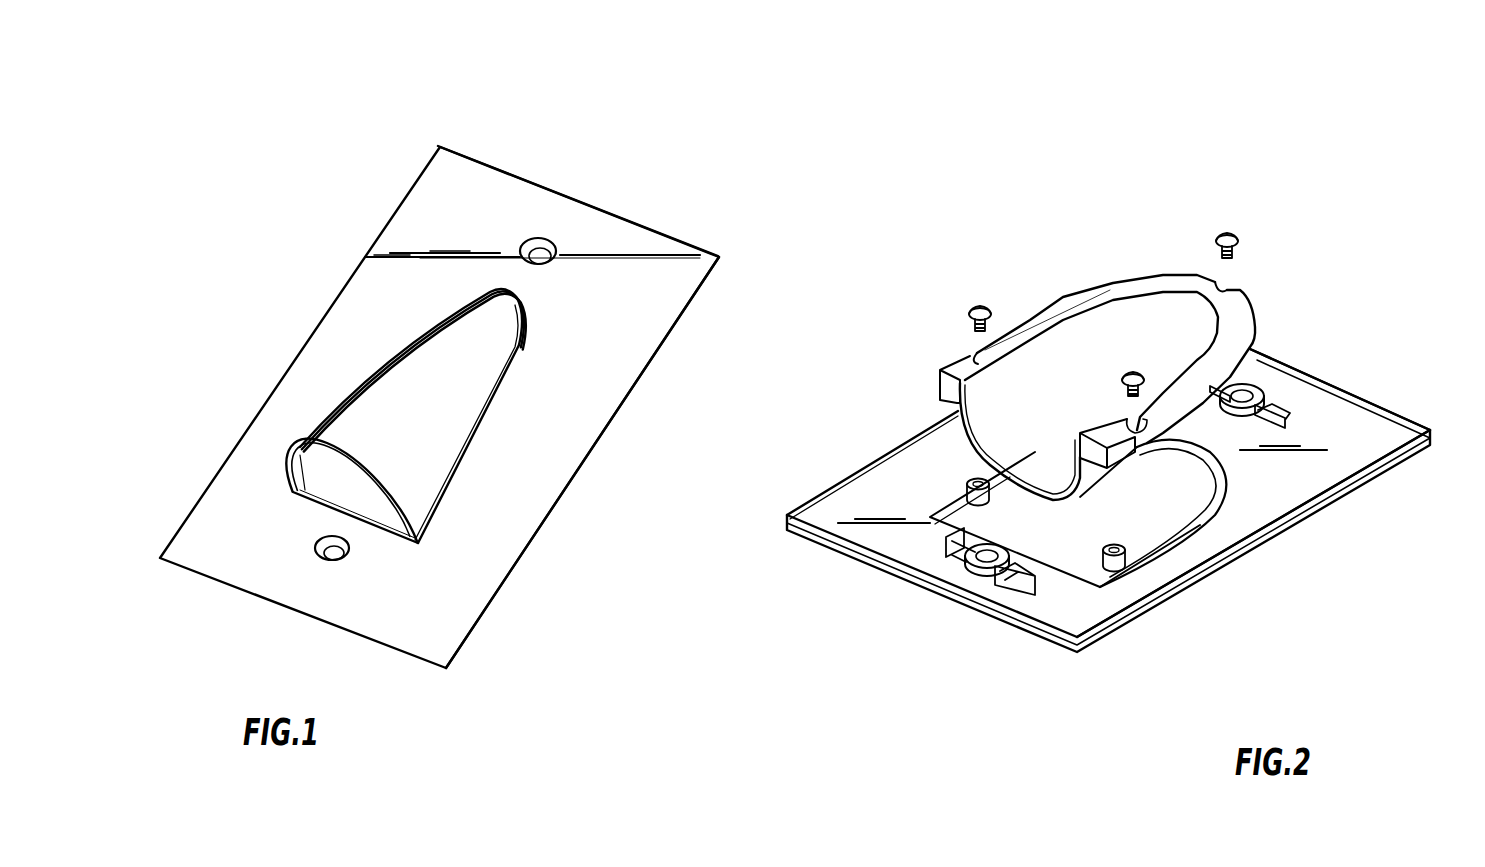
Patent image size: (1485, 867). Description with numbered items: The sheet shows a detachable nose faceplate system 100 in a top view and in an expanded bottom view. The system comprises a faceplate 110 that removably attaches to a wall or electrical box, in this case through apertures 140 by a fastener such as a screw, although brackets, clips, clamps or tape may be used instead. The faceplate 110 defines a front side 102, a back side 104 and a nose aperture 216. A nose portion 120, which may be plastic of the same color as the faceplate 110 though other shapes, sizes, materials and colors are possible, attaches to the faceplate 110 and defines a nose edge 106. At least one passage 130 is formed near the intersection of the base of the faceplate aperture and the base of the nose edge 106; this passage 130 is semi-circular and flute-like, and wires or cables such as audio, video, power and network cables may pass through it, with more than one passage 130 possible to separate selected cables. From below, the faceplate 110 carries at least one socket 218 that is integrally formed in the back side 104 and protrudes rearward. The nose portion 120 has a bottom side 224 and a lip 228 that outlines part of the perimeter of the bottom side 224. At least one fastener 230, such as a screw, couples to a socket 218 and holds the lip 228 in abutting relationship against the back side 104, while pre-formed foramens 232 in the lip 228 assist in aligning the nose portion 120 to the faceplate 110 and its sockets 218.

In FIG. 1, the detachable nose faceplate system 100 is at (308, 184).
In FIG. 2, the detachable nose faceplate system 100 is at (1014, 190).
In FIG. 1, the front side 102 is at (651, 245).
In FIG. 1, the back side 104 is at (705, 317).
In FIG. 2, the back side 104 is at (1273, 478).
In FIG. 1, the nose edge 106 is at (296, 449).
In FIG. 2, the nose edge 106 is at (1035, 500).
In FIG. 1, the faceplate 110 is at (234, 444).
In FIG. 2, the faceplate 110 is at (868, 568).
In FIG. 1, the nose portion 120 is at (463, 366).
In FIG. 2, the nose portion 120 is at (1085, 286).
In FIG. 1, the passage 130 is at (340, 493).
In FIG. 1, the apertures 140 is at (538, 244).
In FIG. 2, the nose aperture 216 is at (1140, 497).
In FIG. 2, the socket 218 is at (1120, 566).
In FIG. 2, the bottom side 224 is at (1140, 322).
In FIG. 2, the lip 228 is at (940, 385).
In FIG. 2, the fastener 230 is at (1240, 232).
In FIG. 2, the foramens 232 is at (1230, 284).